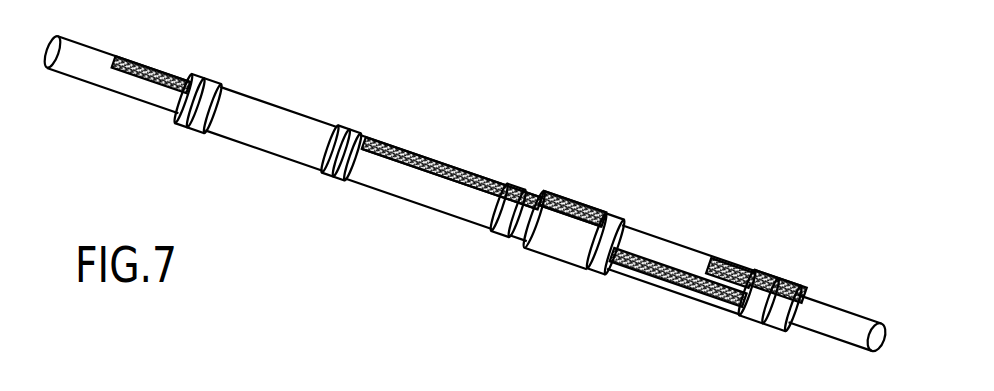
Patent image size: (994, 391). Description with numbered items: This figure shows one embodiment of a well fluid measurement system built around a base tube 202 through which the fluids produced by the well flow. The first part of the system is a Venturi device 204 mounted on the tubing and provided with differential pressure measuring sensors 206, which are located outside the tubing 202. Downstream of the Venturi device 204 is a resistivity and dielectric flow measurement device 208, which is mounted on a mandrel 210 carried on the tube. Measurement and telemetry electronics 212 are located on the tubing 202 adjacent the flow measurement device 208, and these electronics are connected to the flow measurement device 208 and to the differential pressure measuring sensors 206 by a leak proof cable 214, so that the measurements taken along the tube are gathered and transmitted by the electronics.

The base tube 202 is at (860, 318).
The Venturi device 204 is at (748, 260).
The differential pressure measuring sensors 206 is at (660, 285).
The resistivity and dielectric flow measurement device 208 is at (447, 214).
The mandrel 210 is at (398, 182).
The measurement and telemetry electronics 212 is at (263, 142).
The leak proof cable 214 is at (533, 187).